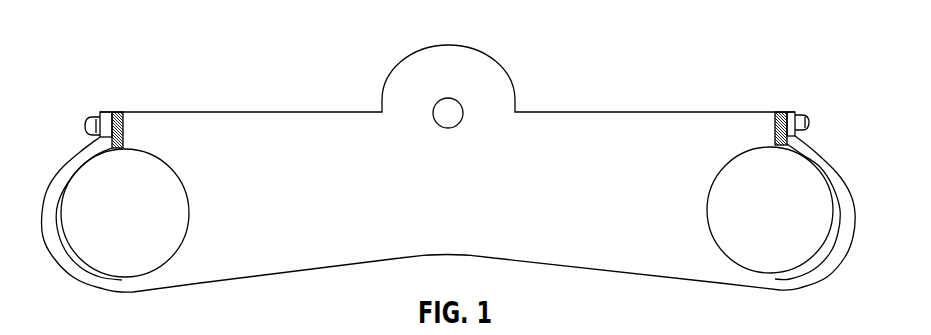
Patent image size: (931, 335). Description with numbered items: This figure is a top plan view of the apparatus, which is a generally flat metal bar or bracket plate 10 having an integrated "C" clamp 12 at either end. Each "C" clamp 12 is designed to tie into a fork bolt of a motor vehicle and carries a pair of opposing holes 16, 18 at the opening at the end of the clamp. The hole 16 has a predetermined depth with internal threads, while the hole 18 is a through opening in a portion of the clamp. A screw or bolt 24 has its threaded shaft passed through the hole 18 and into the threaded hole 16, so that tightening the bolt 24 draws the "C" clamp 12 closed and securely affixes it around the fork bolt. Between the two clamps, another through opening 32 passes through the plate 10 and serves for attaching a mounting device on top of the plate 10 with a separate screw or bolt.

The bracket plate 10 is at (548, 106).
The "C" clamp 12 is at (128, 223).
The hole 16 is at (775, 105).
The hole 18 is at (788, 109).
The bolt 24 is at (85, 125).
The through opening 32 is at (451, 110).